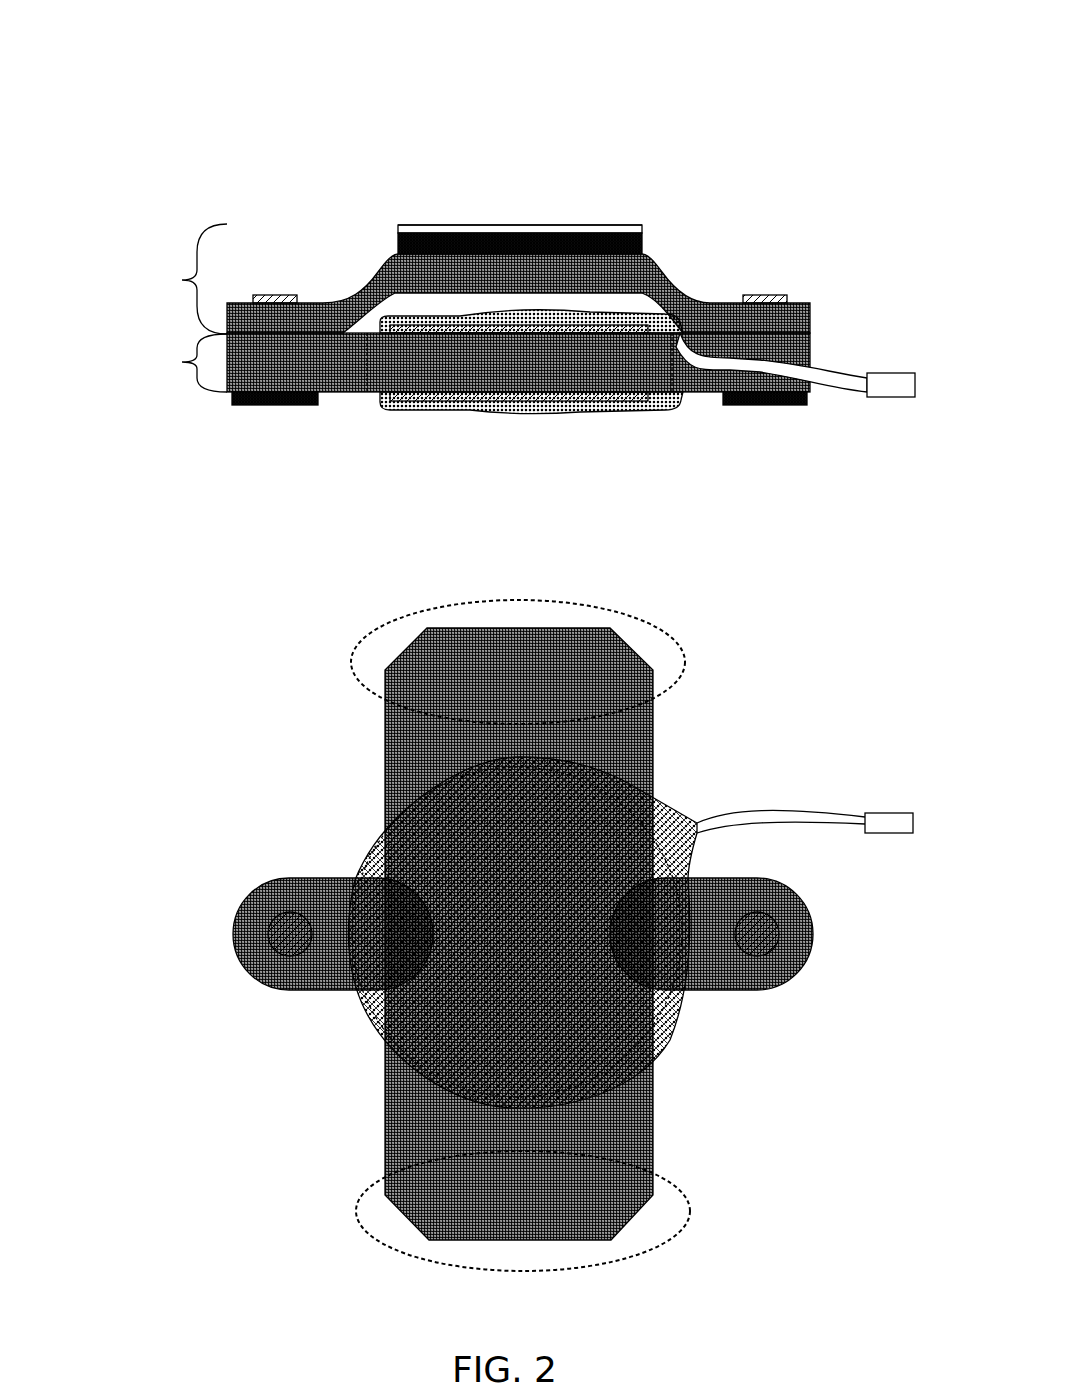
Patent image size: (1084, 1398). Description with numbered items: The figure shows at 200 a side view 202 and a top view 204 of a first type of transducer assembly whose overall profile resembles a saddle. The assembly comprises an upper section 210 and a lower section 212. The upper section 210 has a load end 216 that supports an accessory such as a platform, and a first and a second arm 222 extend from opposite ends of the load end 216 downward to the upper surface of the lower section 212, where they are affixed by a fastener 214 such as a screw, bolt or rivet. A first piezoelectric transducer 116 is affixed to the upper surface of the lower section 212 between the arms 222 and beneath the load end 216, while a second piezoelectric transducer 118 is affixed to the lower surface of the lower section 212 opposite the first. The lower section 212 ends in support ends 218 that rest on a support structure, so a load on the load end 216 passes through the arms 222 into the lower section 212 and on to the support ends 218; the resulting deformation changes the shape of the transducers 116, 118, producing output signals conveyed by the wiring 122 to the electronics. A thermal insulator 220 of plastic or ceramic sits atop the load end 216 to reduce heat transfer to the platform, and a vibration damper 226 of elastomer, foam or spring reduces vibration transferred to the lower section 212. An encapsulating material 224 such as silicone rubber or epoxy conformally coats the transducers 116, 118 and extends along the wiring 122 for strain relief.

The illustration of transducer assembly views 200 is at (825, 43).
The side view 202 is at (213, 78).
The top view 204 is at (240, 592).
The first piezoelectric transducer 116 is at (400, 912).
The second piezoelectric transducer 118 is at (524, 396).
The wiring 122 is at (830, 373).
The upper section 210 is at (432, 254).
The lower section 212 is at (327, 1160).
The fastener 214 is at (280, 405).
The load end 216 is at (521, 217).
The support end 218 is at (658, 373).
The thermal insulator 220 is at (427, 223).
The arm 222 is at (680, 300).
The encapsulating material 224 is at (820, 880).
The vibration damper 226 is at (413, 246).